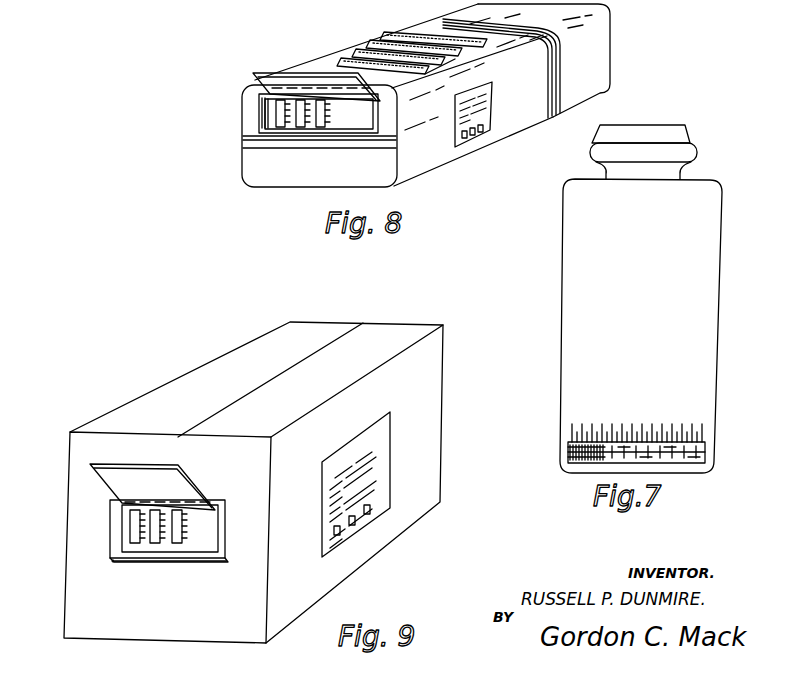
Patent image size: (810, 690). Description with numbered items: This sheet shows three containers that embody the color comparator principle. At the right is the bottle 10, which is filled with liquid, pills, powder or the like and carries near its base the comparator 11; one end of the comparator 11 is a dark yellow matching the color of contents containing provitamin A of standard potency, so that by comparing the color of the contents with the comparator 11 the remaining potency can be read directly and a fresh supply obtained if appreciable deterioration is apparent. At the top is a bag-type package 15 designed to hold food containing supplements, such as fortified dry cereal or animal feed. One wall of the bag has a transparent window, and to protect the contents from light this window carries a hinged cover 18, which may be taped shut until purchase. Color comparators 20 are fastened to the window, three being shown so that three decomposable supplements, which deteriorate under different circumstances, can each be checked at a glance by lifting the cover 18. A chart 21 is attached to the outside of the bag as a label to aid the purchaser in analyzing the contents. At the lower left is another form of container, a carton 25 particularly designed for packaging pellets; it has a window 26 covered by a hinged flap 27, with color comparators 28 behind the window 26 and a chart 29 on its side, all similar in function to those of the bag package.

In FIG. 8, the bottle 10 is at (212, 110).
In FIG. 7, the bottle 10 is at (703, 272).
In FIG. 7, the comparator 11 is at (698, 453).
In FIG. 9, the comparator 11 is at (30, 528).
In FIG. 8, the package box 15 is at (605, 58).
In FIG. 8, the hinged cover 18 is at (269, 84).
In FIG. 8, the color comparators 20 is at (292, 116).
In FIG. 8, the chart 21 is at (467, 141).
In FIG. 9, the carton 25 is at (432, 373).
In FIG. 9, the window 26 is at (210, 520).
In FIG. 9, the hinged flap 27 is at (178, 485).
In FIG. 9, the color comparators 28 is at (178, 540).
In FIG. 9, the chart 29 is at (376, 512).